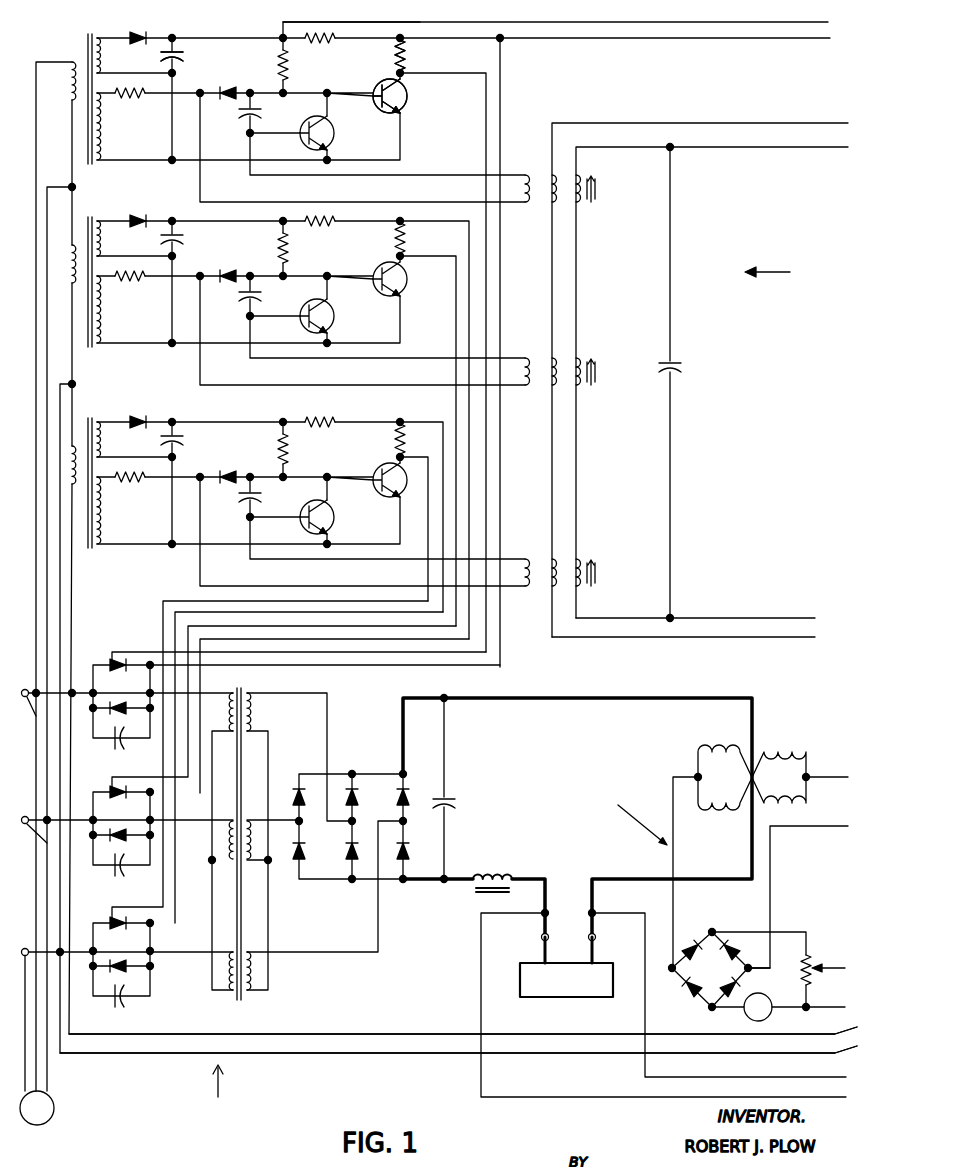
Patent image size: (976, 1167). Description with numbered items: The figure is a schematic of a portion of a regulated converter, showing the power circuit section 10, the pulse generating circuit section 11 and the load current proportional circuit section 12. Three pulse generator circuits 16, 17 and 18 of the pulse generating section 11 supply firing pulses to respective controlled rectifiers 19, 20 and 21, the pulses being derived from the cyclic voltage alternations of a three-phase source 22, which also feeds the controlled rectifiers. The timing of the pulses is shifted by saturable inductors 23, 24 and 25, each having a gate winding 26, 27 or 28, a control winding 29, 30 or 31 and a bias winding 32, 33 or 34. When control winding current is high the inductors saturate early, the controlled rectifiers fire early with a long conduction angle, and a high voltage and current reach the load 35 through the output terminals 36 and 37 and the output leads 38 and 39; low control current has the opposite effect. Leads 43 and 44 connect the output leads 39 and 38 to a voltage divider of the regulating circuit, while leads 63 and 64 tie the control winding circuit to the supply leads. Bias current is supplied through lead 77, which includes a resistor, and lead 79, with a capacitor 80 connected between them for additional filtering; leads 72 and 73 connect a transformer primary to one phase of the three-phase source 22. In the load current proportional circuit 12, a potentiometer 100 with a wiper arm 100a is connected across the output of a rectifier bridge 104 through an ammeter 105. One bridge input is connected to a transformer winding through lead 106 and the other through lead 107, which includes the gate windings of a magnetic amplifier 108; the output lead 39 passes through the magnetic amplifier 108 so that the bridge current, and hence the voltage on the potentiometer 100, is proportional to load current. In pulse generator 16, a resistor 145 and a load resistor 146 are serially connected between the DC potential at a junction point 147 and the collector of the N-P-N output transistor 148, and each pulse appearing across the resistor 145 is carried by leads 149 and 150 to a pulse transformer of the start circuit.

The power circuit section 10 is at (218, 1092).
The pulse generating circuit section 11 is at (780, 273).
The load current proportional circuit section 12 is at (629, 814).
The pulse generator circuit 16 is at (340, 81).
The pulse generator circuit 17 is at (340, 261).
The pulse generator circuit 18 is at (330, 456).
The controlled rectifier 19 is at (112, 662).
The controlled rectifier 20 is at (112, 790).
The controlled rectifier 21 is at (112, 920).
The three-phase source 22 is at (50, 1120).
The saturable inductor 23 is at (598, 178).
The saturable inductor 24 is at (598, 360).
The saturable inductor 25 is at (598, 562).
The gate winding 26 is at (528, 180).
The gate winding 27 is at (528, 362).
The gate winding 28 is at (528, 562).
The control winding 29 is at (550, 204).
The control winding 30 is at (550, 387).
The control winding 31 is at (550, 588).
The bias winding 32 is at (590, 204).
The bias winding 33 is at (590, 387).
The bias winding 34 is at (590, 588).
The load 35 is at (562, 997).
The output terminal 36 is at (540, 940).
The output terminal 37 is at (595, 935).
The output lead 38 is at (520, 879).
The output lead 39 is at (612, 698).
The lead 43 is at (648, 1013).
The lead 44 is at (481, 1013).
The lead 63 is at (742, 123).
The lead 64 is at (715, 637).
The lead 72 is at (330, 1034).
The lead 73 is at (338, 1053).
The lead 77 is at (780, 150).
The lead 79 is at (745, 618).
The capacitor 80 is at (682, 366).
The potentiometer 100 is at (812, 976).
The wiper arm 100a is at (820, 964).
The rectifier bridge 104 is at (716, 935).
The ammeter 105 is at (770, 1016).
The lead 106 is at (775, 834).
The lead 107 is at (674, 830).
The magnetic amplifier 108 is at (778, 752).
The resistor 145 is at (315, 22).
The load resistor 146 is at (410, 58).
The junction point 147 is at (180, 40).
The output transistor 148 is at (409, 98).
The lead 149 is at (545, 24).
The lead 150 is at (627, 40).